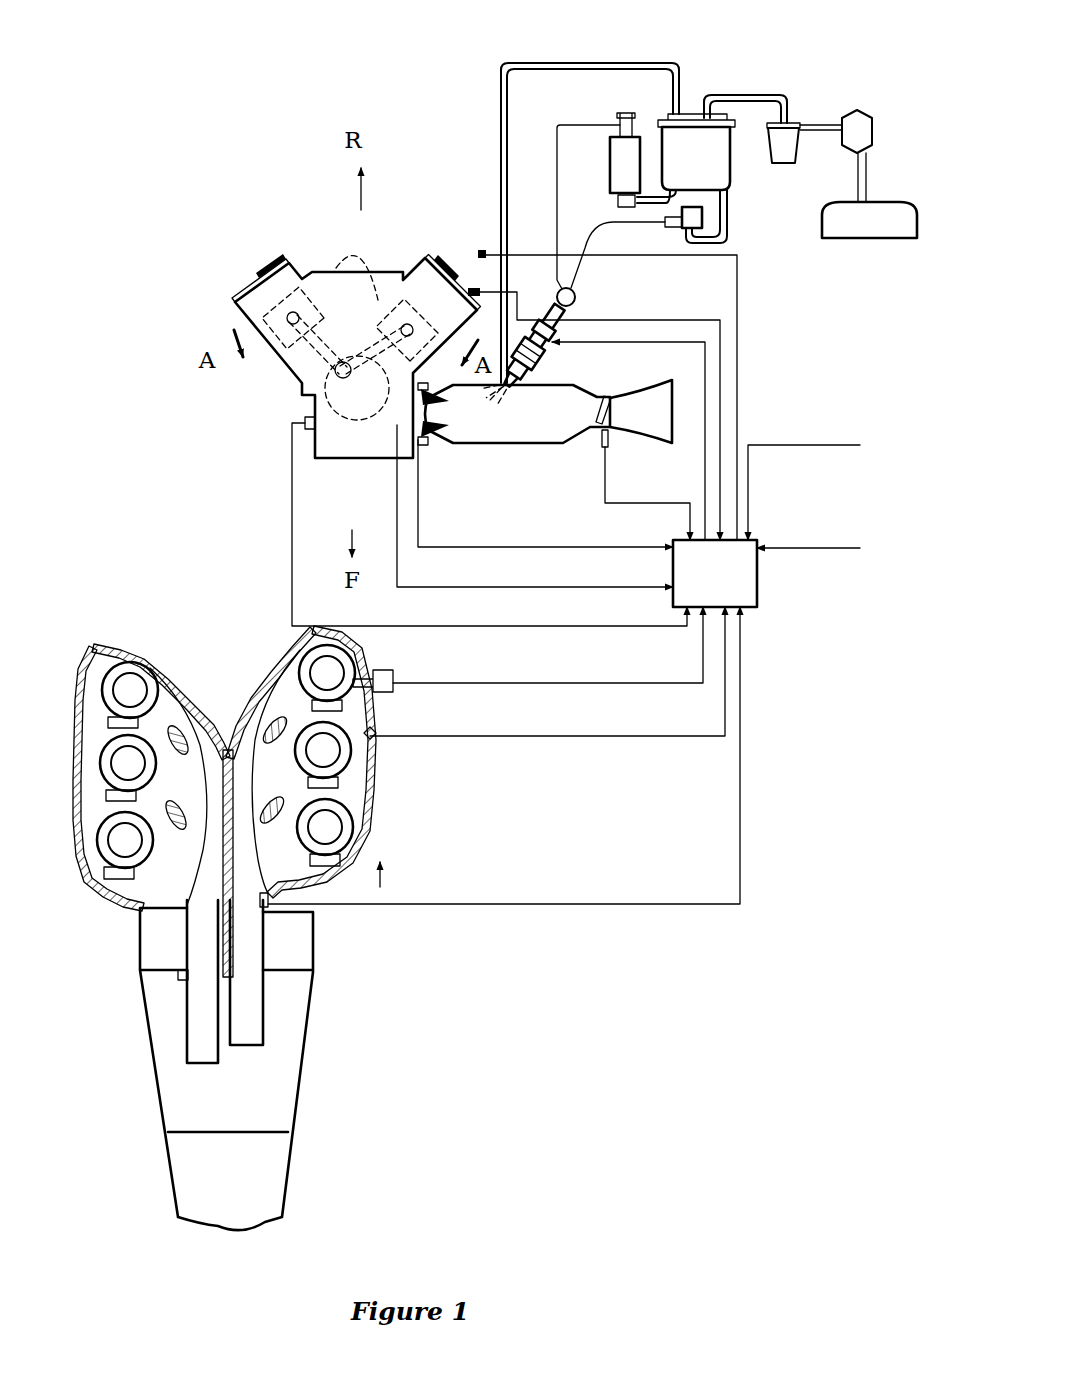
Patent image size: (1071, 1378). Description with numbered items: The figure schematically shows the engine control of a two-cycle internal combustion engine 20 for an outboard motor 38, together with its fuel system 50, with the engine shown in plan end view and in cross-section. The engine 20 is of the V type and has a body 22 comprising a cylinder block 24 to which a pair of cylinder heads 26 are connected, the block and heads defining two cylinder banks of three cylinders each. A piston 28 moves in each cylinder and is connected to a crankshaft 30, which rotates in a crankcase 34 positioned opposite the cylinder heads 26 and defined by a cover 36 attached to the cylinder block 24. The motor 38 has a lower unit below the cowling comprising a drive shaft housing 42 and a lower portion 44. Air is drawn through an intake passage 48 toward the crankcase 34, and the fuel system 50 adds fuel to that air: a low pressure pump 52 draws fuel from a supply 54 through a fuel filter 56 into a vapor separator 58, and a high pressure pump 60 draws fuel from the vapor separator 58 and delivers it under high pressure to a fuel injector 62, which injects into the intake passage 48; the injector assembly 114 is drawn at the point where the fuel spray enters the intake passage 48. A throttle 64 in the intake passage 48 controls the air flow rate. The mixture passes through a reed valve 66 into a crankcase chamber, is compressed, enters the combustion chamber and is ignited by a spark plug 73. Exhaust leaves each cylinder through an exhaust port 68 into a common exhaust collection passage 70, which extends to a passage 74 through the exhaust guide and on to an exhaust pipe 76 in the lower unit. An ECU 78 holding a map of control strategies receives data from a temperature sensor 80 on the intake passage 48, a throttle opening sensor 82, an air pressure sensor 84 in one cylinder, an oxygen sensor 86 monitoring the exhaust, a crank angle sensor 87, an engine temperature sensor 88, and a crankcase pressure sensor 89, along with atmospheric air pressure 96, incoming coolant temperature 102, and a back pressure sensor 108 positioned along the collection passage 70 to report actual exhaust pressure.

The internal combustion engine 20 is at (318, 220).
The body 22 is at (158, 430).
The cylinder block 24 is at (273, 363).
The cylinder heads 26 is at (236, 318).
The piston 28 is at (366, 255).
The crankshaft 30 is at (333, 462).
The crankcase 34 is at (312, 443).
The cover 36 is at (352, 463).
The outboard motor 38 is at (375, 1022).
The drive shaft housing 42 is at (313, 997).
The lower portion 44 is at (290, 1188).
The intake passage 48 is at (522, 445).
The fuel system 50 is at (780, 215).
The low pressure pump 52 is at (788, 158).
The fuel supply 54 is at (885, 225).
The fuel filter 56 is at (873, 133).
The vapor separator 58 is at (690, 114).
The high pressure pump 60 is at (617, 157).
The fuel injector 62 is at (578, 295).
The throttle 64 is at (615, 405).
The reed valve 66 is at (433, 402).
The exhaust port 68 is at (253, 707).
The common exhaust collection passage 70 is at (203, 893).
The spark plug 73 is at (460, 273).
The exhaust guide passage 74 is at (200, 988).
The exhaust pipe 76 is at (222, 1062).
The electronic engine control unit (ECU) 78 is at (758, 583).
The temperature sensor 80 is at (424, 447).
The throttle opening sensor 82 is at (603, 449).
The air pressure sensor 84 is at (482, 277).
The oxygen sensor 86 is at (392, 670).
The crank angle sensor 87 is at (381, 422).
The temperature sensor 88 is at (380, 740).
The crankcase pressure sensor 89 is at (288, 410).
The atmospheric air pressure 96 is at (825, 484).
The incoming coolant temperature 102 is at (836, 546).
The back pressure sensor 108 is at (297, 890).
The fuel injector 114 is at (550, 358).